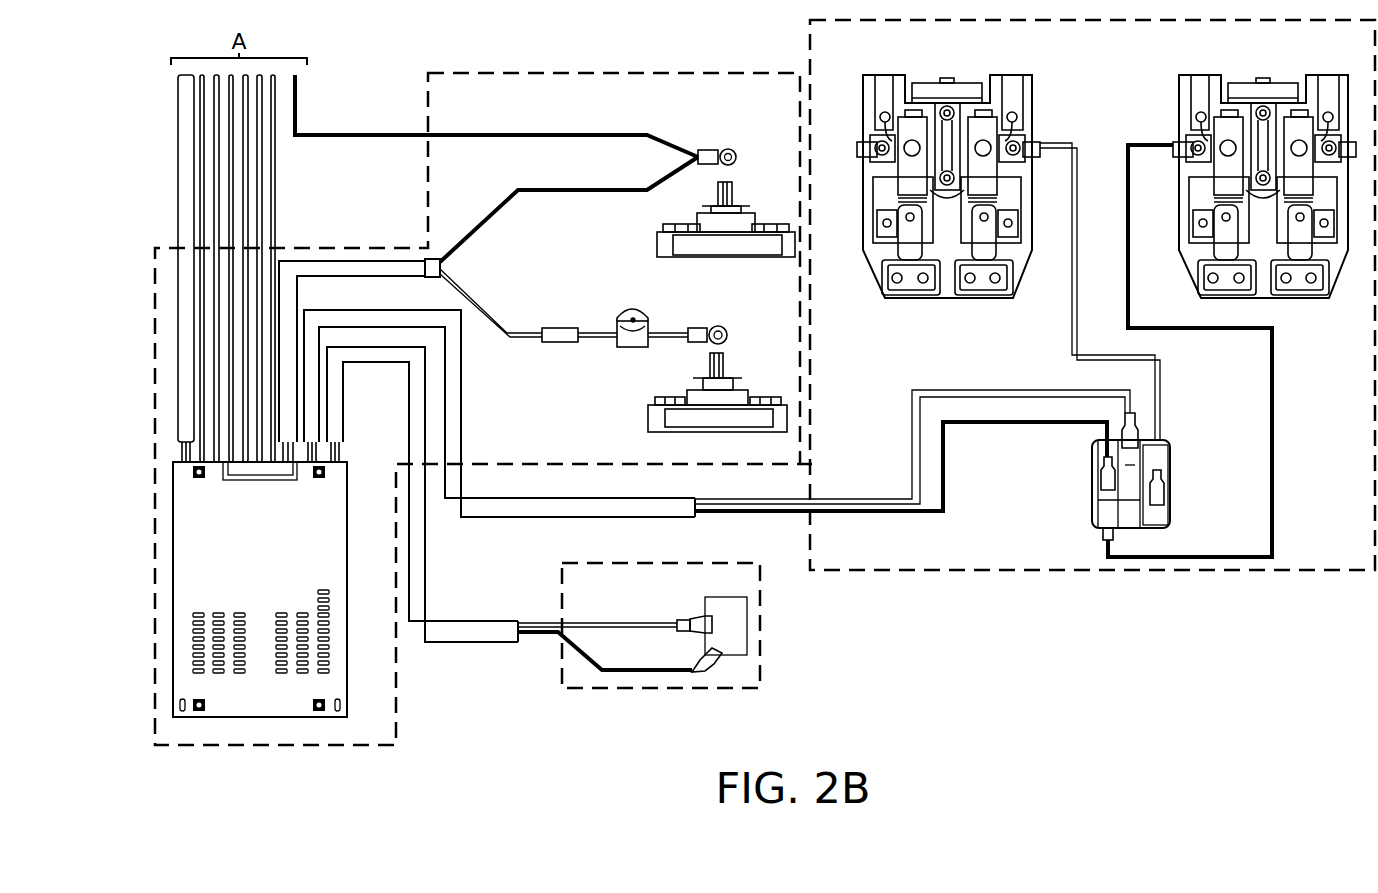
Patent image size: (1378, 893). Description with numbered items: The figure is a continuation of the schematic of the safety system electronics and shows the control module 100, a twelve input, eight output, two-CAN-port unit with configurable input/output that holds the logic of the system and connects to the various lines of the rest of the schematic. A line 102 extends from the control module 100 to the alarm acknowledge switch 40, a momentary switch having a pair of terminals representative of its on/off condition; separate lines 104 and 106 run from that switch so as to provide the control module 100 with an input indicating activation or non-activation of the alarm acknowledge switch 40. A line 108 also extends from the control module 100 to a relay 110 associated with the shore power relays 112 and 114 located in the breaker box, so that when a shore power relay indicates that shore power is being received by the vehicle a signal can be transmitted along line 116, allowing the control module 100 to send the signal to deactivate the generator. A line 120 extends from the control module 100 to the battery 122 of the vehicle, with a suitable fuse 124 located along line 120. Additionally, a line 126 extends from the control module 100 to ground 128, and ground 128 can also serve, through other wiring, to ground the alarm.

The alarm acknowledge switch 40 is at (740, 640).
The control module 100 is at (290, 718).
The line 102 is at (465, 645).
The line 104 is at (600, 622).
The line 106 is at (610, 673).
The line 108 is at (518, 520).
The relay 110 is at (1172, 495).
The shore power relay 112 is at (965, 300).
The shore power relay 114 is at (1320, 300).
The line 116 is at (878, 492).
The line 120 is at (495, 308).
The battery 122 is at (648, 420).
The fuse 124 is at (628, 313).
The line 126 is at (582, 195).
The ground 128 is at (545, 130).